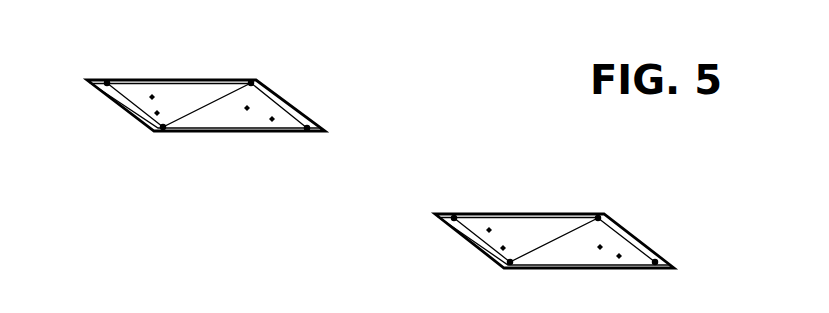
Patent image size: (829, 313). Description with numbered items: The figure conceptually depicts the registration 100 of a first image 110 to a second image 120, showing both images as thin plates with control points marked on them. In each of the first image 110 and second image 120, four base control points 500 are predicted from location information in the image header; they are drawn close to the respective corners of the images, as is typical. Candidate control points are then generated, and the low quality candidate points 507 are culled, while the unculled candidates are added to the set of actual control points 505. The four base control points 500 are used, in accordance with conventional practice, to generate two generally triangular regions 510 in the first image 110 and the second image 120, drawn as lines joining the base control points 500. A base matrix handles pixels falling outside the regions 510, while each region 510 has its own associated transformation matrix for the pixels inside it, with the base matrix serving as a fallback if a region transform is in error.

The registration 100 is at (222, 277).
The first image 110 is at (173, 80).
The second image 120 is at (547, 270).
The base control points 500 is at (107, 81).
The actual control points 505 is at (151, 94).
The low quality candidate points 507 is at (153, 114).
The regions 510 is at (138, 102).